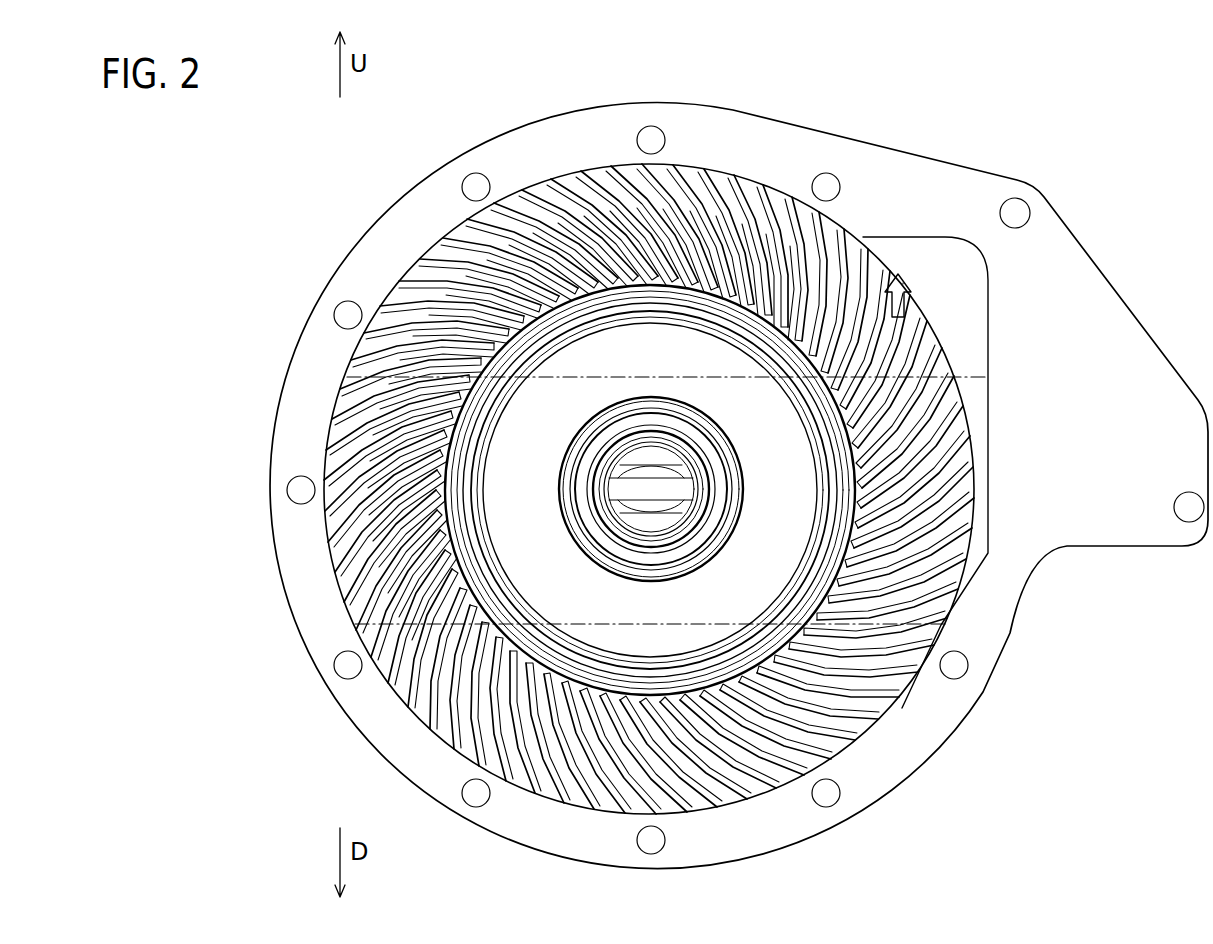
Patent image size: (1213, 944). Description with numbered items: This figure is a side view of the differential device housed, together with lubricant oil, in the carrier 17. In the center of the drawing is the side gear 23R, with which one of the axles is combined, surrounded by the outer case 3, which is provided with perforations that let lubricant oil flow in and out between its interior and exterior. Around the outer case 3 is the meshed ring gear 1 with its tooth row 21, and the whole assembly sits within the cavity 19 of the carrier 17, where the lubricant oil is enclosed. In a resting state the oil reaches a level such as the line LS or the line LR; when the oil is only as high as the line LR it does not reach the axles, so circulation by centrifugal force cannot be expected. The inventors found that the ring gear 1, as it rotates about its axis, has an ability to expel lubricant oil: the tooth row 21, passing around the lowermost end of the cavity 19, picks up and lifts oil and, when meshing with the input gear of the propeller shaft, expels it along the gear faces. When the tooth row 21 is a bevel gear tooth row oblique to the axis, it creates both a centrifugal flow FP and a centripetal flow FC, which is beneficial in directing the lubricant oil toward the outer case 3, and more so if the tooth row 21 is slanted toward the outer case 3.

The ring gear 1 is at (942, 378).
The outer case 3 is at (542, 342).
The carrier 17 is at (1095, 262).
The cavity 19 is at (930, 250).
The tooth row 21 is at (905, 348).
The side gear 23R is at (565, 467).
The centrifugal flow FP is at (903, 283).
The line LS is at (700, 375).
The line LR is at (665, 621).
The centripetal flow FC is at (833, 431).